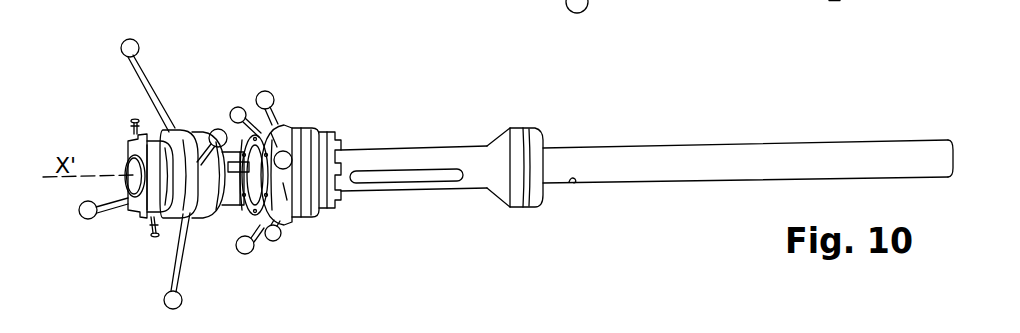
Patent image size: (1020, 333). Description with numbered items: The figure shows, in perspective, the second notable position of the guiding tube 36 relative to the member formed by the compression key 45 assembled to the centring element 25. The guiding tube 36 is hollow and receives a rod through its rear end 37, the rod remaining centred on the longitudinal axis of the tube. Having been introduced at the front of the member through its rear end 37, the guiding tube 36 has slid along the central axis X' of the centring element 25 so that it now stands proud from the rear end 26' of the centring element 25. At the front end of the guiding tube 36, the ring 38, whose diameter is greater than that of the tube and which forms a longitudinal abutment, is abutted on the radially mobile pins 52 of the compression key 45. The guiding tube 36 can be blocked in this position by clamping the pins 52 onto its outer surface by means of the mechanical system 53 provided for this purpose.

The centring element 25 is at (398, 124).
The rear end of the centring element 26' is at (508, 128).
The guiding tube 36 is at (622, 120).
The rear end of the guiding tube 37 is at (953, 147).
The ring 38 is at (127, 200).
The compression key 45 is at (217, 100).
The pins 52 is at (127, 148).
The mechanical system 53 is at (134, 120).